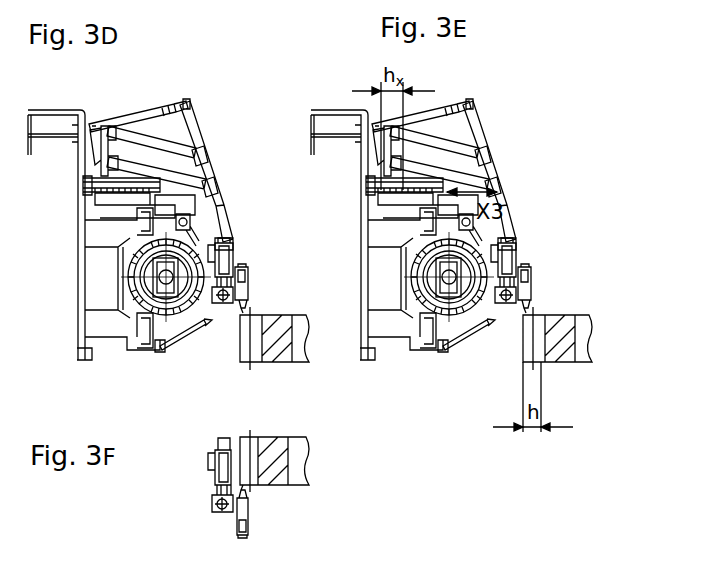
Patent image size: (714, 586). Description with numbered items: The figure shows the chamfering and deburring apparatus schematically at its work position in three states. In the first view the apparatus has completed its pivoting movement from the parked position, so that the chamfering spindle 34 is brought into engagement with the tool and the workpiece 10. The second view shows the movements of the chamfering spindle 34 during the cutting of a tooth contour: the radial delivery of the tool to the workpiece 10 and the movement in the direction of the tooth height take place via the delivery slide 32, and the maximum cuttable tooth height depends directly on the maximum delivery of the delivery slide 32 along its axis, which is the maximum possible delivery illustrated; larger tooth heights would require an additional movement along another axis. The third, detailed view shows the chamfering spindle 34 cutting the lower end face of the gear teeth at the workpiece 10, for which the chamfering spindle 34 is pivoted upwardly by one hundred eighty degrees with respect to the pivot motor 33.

In FIG. 3D, the workpiece 10 is at (300, 353).
In FIG. 3E, the workpiece 10 is at (591, 339).
In FIG. 3F, the workpiece 10 is at (305, 483).
In FIG. 3D, the delivery slide 32 is at (90, 190).
In FIG. 3E, the delivery slide 32 is at (378, 199).
In FIG. 3D, the pivot motor 33 is at (236, 246).
In FIG. 3E, the pivot motor 33 is at (503, 270).
In FIG. 3F, the pivot motor 33 is at (212, 467).
In FIG. 3D, the chamfering spindle 34 is at (249, 290).
In FIG. 3E, the chamfering spindle 34 is at (524, 288).
In FIG. 3F, the chamfering spindle 34 is at (238, 524).